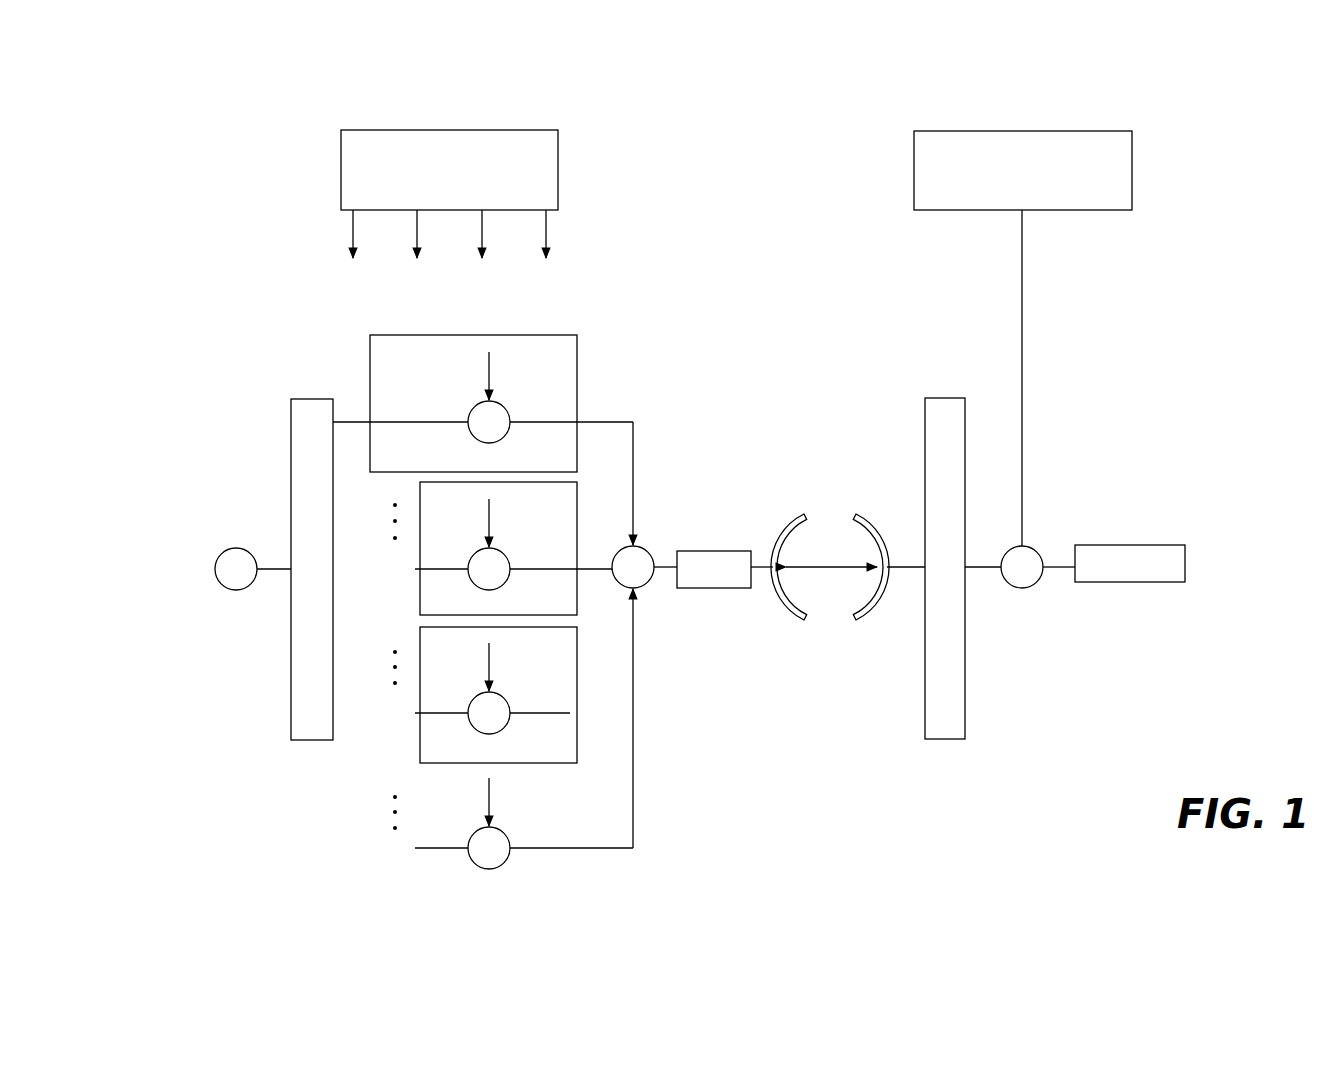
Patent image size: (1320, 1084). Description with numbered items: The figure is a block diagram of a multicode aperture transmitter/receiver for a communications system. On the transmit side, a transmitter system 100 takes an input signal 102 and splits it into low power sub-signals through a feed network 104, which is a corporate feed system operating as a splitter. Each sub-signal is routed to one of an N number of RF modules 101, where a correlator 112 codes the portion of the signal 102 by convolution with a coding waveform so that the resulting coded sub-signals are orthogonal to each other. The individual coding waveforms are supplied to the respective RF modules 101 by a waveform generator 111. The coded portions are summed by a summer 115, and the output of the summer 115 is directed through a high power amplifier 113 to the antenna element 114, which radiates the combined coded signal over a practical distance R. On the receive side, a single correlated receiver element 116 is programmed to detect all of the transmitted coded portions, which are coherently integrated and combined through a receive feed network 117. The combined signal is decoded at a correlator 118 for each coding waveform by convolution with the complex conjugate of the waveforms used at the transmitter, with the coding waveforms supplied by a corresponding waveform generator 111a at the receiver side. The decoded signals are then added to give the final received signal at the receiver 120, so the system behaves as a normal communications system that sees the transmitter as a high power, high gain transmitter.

The transmitter system 100 is at (270, 805).
The RF modules 101 is at (373, 495).
The signal 102 is at (236, 590).
The feed network 104 is at (305, 399).
The waveform generator 111 is at (558, 170).
The waveform generator 111a is at (1132, 170).
The correlator 112 is at (494, 441).
The high power amplifier 113 is at (712, 588).
The antenna element 114 is at (782, 527).
The summer 115 is at (650, 553).
The receiver element 116 is at (877, 522).
The receive feed network 117 is at (945, 739).
The correlator 118 is at (1022, 588).
The receiver 120 is at (1130, 582).